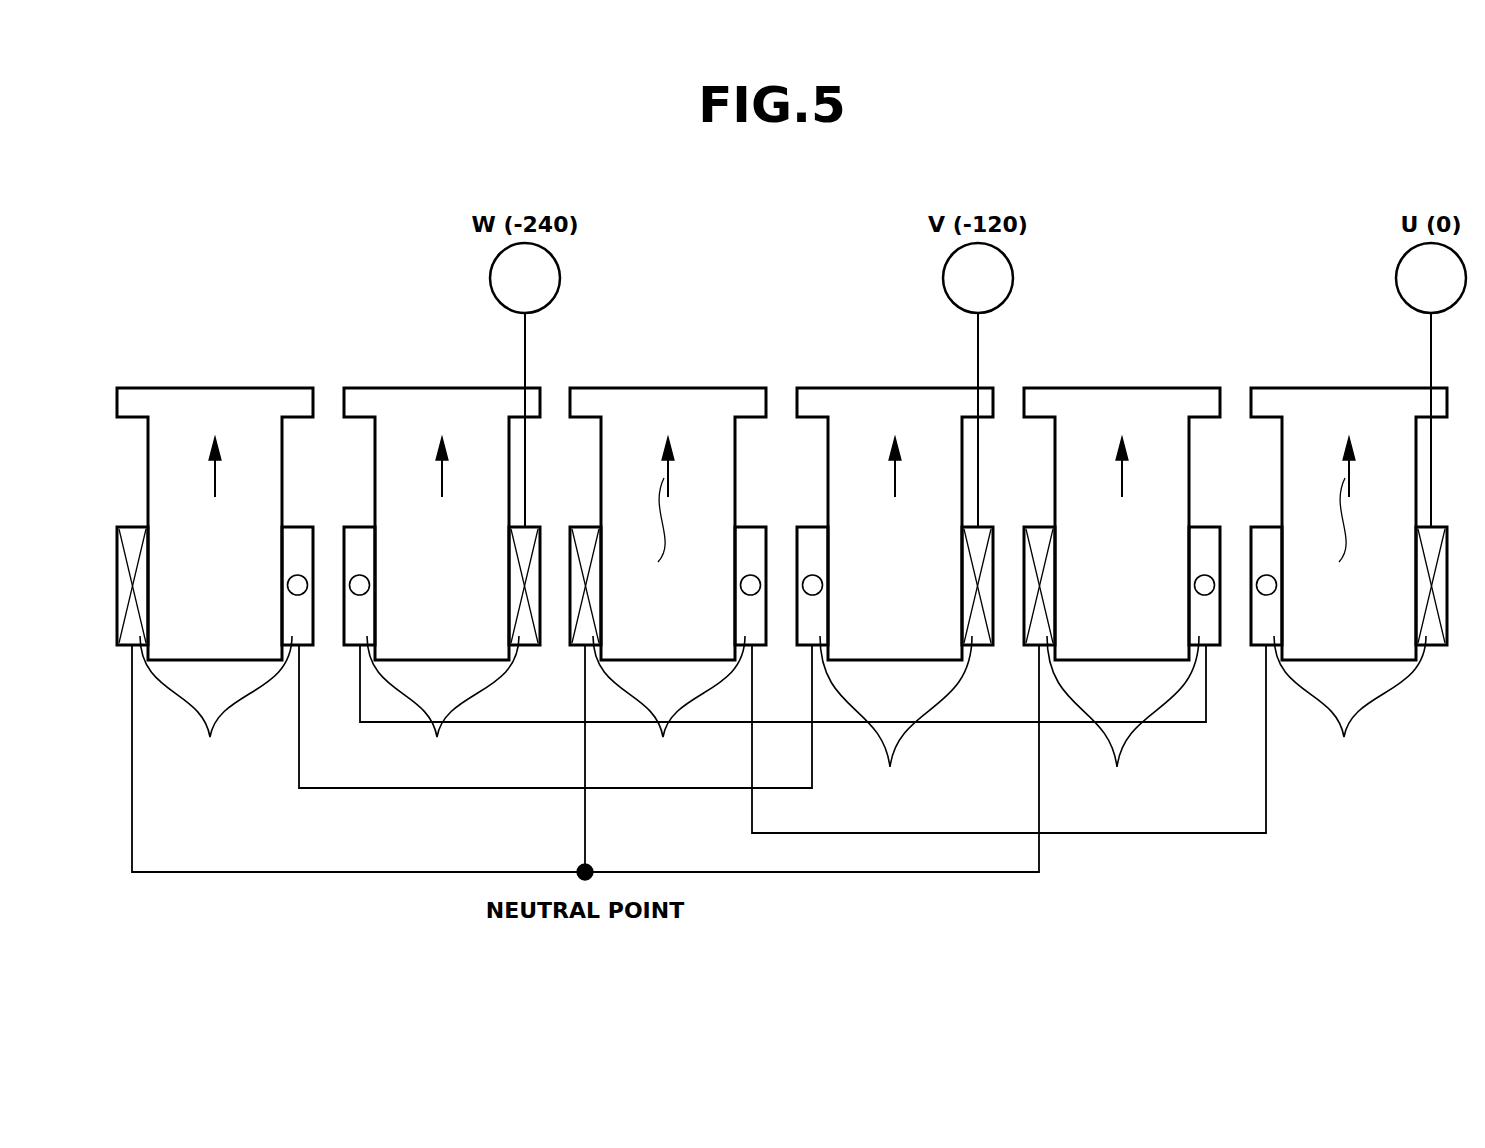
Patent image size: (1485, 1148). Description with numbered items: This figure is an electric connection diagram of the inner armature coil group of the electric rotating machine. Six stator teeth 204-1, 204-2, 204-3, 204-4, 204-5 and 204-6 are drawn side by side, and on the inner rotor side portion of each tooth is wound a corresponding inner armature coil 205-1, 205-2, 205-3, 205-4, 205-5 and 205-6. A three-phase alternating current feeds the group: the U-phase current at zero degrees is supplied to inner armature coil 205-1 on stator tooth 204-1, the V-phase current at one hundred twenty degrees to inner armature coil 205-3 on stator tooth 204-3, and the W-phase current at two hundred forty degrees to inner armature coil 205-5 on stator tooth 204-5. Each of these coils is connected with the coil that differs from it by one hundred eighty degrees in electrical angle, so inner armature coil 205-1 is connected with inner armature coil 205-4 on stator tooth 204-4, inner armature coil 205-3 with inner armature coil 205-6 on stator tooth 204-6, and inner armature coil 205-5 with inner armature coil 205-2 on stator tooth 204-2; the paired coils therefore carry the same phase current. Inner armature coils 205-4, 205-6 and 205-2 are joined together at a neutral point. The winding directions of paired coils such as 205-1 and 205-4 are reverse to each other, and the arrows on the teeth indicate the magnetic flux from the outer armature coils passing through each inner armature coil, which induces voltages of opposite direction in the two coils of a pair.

The stator tooth 204-1 is at (1354, 415).
The stator tooth 204-2 is at (1127, 415).
The stator tooth 204-3 is at (900, 415).
The stator tooth 204-4 is at (673, 415).
The stator tooth 204-5 is at (447, 415).
The stator tooth 204-6 is at (220, 415).
The inner armature coil 205-1 is at (1349, 652).
The inner armature coil 205-2 is at (1122, 664).
The inner armature coil 205-3 is at (895, 664).
The inner armature coil 205-4 is at (668, 652).
The inner armature coil 205-5 is at (442, 652).
The inner armature coil 205-6 is at (215, 652).